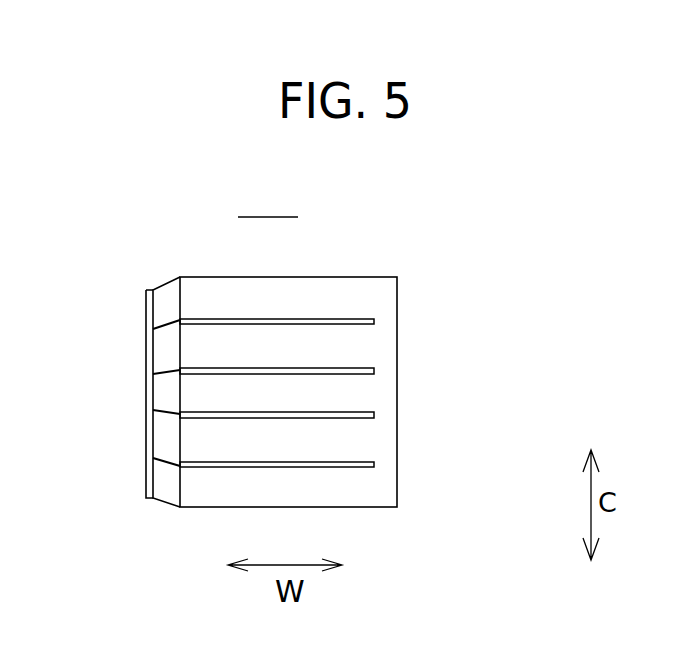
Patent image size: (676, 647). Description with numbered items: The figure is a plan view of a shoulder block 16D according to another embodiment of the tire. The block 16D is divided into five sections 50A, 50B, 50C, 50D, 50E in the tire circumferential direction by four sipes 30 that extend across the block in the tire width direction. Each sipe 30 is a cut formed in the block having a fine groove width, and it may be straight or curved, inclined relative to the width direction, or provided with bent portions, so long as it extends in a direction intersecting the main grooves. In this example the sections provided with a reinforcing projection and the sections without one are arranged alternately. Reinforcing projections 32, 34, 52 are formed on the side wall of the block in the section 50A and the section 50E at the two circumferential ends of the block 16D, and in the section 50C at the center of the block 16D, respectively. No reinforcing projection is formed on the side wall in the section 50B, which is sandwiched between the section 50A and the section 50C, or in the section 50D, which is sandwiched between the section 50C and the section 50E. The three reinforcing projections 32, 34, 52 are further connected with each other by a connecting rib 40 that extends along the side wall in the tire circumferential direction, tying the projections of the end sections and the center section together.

The block 16D is at (268, 201).
The sipe 30 is at (332, 313).
The reinforcing projection 32 is at (152, 304).
The reinforcing projection 34 is at (158, 488).
The connecting rib 40 is at (146, 353).
The section 50A is at (323, 293).
The section 50B is at (323, 348).
The section 50C is at (323, 395).
The section 50D is at (315, 443).
The section 50E is at (313, 488).
The reinforcing projection 52 is at (162, 400).